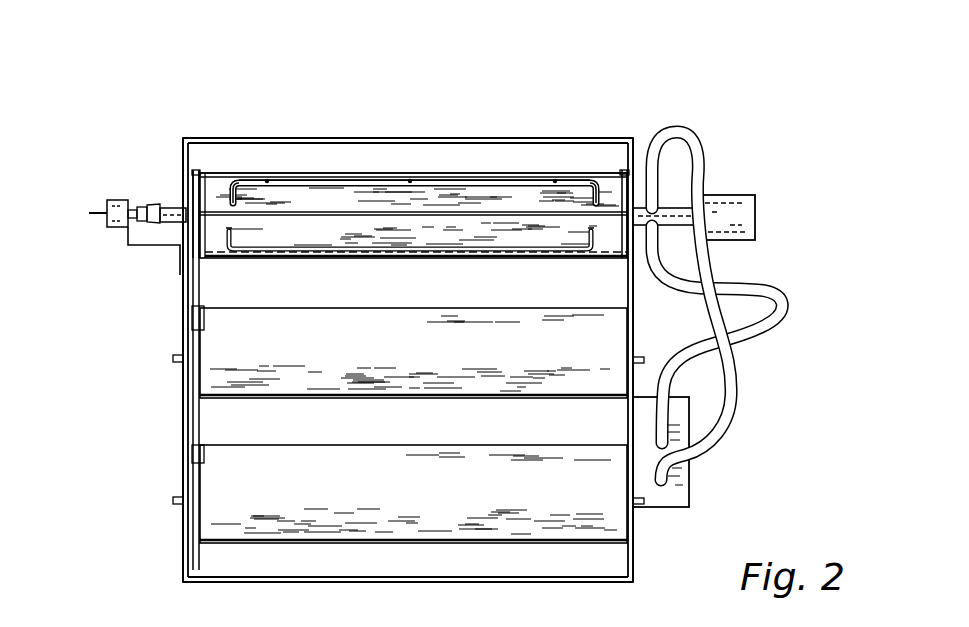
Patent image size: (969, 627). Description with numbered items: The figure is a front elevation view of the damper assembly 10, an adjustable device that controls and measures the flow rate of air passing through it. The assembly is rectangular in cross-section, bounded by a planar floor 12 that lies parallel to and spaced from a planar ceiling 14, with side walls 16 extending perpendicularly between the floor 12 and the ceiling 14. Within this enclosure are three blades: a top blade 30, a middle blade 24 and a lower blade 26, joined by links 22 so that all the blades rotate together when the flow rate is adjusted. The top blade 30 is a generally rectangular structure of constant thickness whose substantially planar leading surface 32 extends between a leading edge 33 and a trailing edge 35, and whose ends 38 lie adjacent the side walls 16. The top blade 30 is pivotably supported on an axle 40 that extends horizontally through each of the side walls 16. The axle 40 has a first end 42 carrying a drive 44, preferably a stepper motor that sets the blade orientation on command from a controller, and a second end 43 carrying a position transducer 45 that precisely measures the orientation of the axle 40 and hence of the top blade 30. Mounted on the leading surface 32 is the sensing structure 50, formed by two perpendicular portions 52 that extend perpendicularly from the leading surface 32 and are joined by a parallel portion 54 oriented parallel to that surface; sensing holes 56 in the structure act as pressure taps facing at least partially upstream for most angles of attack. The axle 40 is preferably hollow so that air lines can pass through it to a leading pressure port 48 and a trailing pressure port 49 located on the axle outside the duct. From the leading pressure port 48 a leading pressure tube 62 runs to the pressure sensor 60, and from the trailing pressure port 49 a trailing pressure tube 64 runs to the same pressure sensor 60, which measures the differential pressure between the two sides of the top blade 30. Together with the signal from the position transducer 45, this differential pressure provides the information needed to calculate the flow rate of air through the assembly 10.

The damper assembly 10 is at (116, 82).
The planar floor 12 is at (467, 581).
The planar ceiling 14 is at (199, 136).
The side walls 16 is at (185, 535).
The links 22 is at (193, 418).
The middle blade 24 is at (387, 357).
The lower blade 26 is at (374, 504).
The top blade 30 is at (303, 241).
The leading surface 32 is at (385, 233).
The leading edge 33 is at (213, 256).
The trailing edge 35 is at (222, 172).
The ends 38 is at (200, 243).
The axle 40 is at (490, 211).
The first end 42 is at (680, 210).
The second end 43 is at (173, 206).
The drive 44 is at (745, 213).
The position transducer 45 is at (107, 205).
The leading pressure port 48 is at (648, 205).
The trailing pressure port 49 is at (648, 234).
The sensing structure 50 is at (333, 179).
The perpendicular portions 52 is at (228, 188).
The parallel portion 54 is at (446, 180).
The sensing holes 56 is at (267, 178).
The pressure sensor 60 is at (690, 492).
The leading pressure tube 62 is at (732, 372).
The trailing pressure tube 64 is at (745, 333).